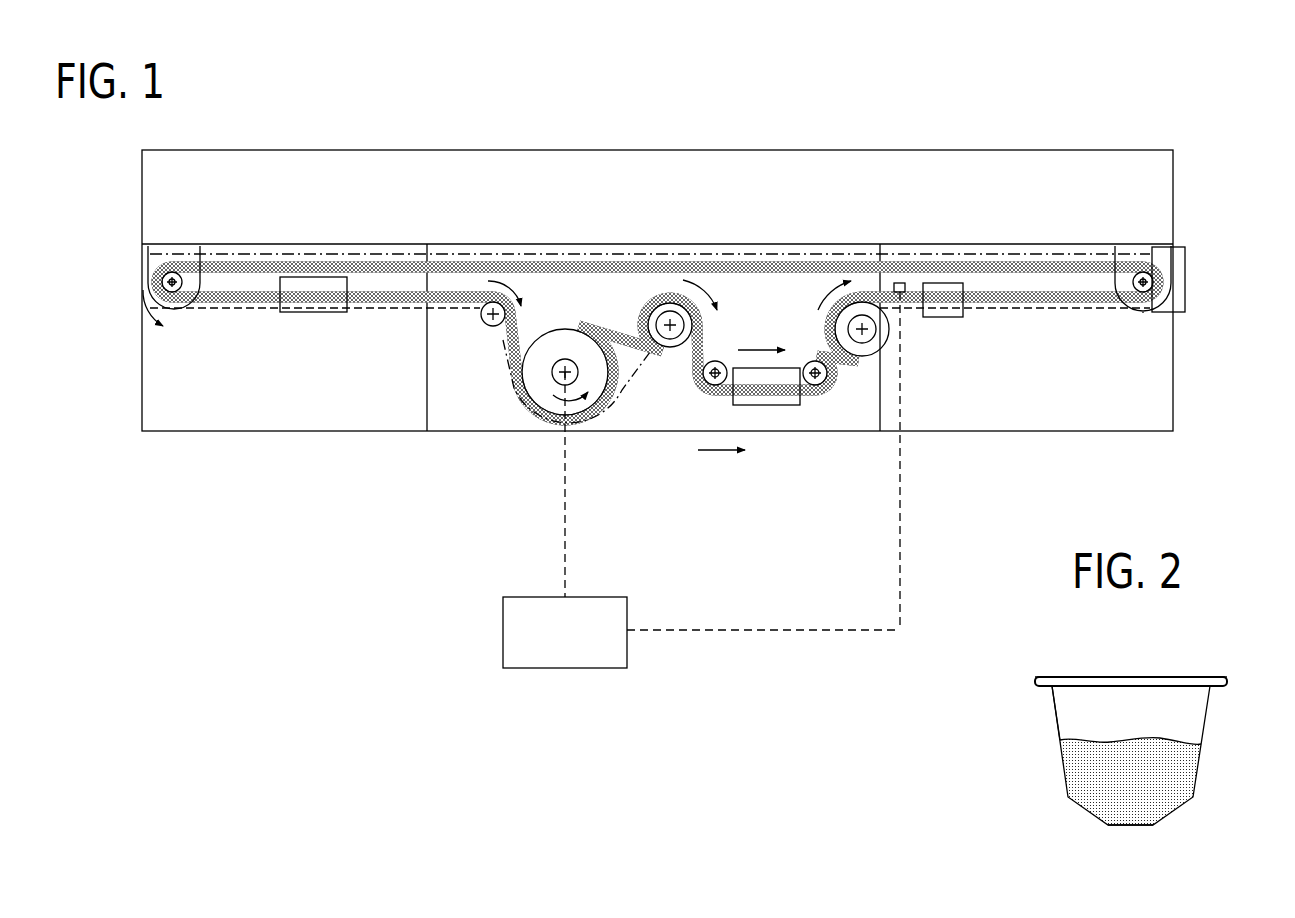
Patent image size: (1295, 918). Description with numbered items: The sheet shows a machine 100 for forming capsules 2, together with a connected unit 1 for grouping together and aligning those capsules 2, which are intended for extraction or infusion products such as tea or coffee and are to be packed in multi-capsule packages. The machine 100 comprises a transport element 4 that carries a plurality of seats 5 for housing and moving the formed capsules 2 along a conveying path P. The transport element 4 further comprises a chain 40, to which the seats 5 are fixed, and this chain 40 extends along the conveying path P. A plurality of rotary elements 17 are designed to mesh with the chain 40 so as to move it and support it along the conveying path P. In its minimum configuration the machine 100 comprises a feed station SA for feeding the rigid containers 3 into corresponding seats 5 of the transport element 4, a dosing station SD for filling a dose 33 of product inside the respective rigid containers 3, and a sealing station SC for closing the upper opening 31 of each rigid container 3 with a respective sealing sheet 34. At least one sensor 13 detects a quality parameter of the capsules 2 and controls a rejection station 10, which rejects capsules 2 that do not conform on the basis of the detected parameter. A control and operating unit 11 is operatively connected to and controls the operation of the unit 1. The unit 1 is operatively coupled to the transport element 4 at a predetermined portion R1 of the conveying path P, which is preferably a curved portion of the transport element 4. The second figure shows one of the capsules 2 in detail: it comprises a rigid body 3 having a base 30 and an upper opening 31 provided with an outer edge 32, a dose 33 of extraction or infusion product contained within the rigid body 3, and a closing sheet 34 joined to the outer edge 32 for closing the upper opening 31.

In FIG. 1, the machine 100 is at (240, 490).
In FIG. 1, the unit 1 is at (1143, 318).
In FIG. 1, the transport element 4 is at (242, 310).
In FIG. 1, the seats 5 is at (332, 268).
In FIG. 1, the rejection station 10 is at (941, 320).
In FIG. 1, the control and operating unit 11 is at (578, 642).
In FIG. 1, the sensor 13 is at (899, 281).
In FIG. 1, the rotary elements 17 is at (174, 274).
In FIG. 1, the chain 40 is at (943, 258).
In FIG. 1, the feed station SA is at (317, 315).
In FIG. 1, the sealing station SC is at (773, 410).
In FIG. 1, the dosing station SD is at (565, 306).
In FIG. 1, the conveying path P is at (598, 252).
In FIG. 1, the predetermined portion R1 is at (1192, 270).
In FIG. 2, the capsule 2 is at (1102, 727).
In FIG. 2, the rigid body 3 is at (1221, 718).
In FIG. 2, the base 30 is at (1125, 827).
In FIG. 2, the upper opening 31 is at (1174, 667).
In FIG. 2, the outer edge 32 is at (1050, 688).
In FIG. 2, the dose 33 is at (1113, 768).
In FIG. 2, the closing sheet 34 is at (1075, 677).